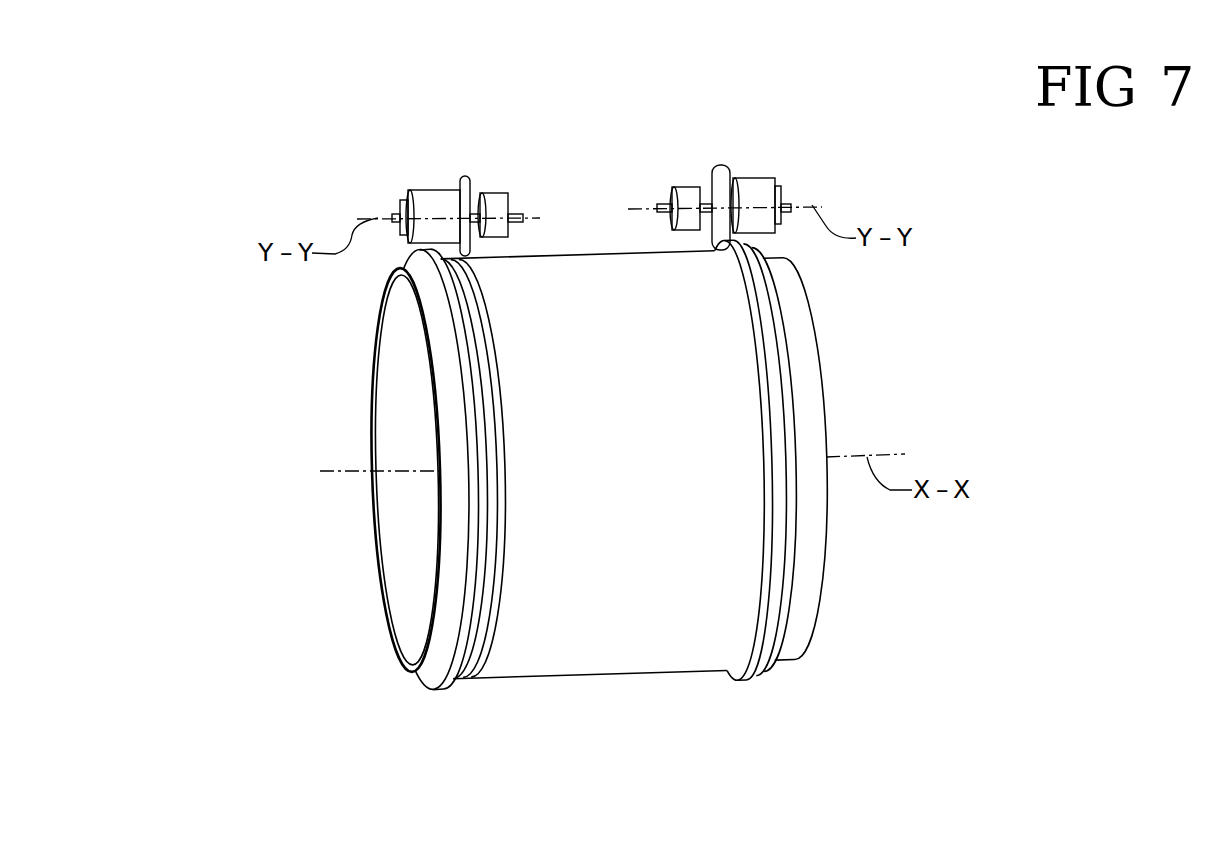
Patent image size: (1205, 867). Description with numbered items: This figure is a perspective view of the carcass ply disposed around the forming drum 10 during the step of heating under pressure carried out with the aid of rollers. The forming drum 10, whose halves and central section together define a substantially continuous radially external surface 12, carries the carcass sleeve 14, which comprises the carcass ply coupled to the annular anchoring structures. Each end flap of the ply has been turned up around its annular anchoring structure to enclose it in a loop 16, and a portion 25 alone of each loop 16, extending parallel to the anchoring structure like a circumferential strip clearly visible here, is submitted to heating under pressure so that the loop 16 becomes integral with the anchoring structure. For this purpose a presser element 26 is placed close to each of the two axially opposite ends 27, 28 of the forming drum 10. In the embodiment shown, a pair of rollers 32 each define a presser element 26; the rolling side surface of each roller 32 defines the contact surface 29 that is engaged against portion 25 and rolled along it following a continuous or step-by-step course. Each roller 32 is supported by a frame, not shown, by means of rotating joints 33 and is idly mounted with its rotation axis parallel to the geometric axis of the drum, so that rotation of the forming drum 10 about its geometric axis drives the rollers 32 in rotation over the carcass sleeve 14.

The forming drum 10 is at (612, 469).
The radially external surface 12 is at (748, 524).
The carcass sleeve 14 is at (610, 678).
The loop 16 is at (628, 415).
The portion 25 is at (482, 303).
The presser element 26 is at (416, 173).
The axially opposite end 27 is at (831, 398).
The axially opposite end 28 is at (370, 341).
The contact surface 29 is at (470, 178).
The roller 32 is at (450, 165).
The rotating joint 33 is at (400, 188).